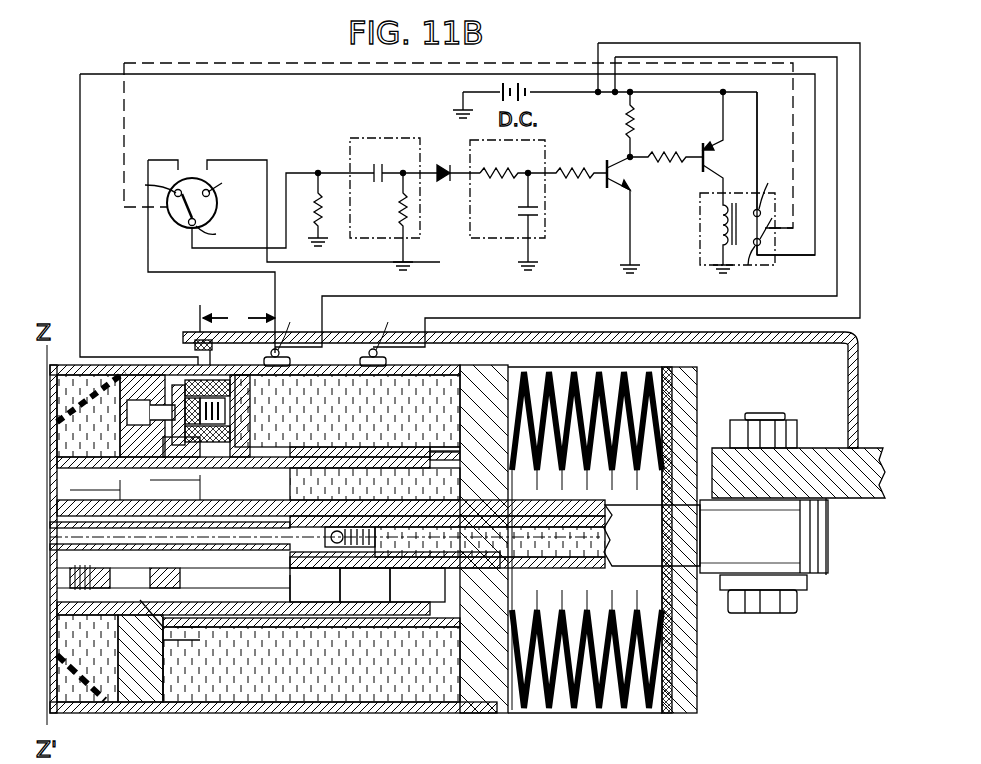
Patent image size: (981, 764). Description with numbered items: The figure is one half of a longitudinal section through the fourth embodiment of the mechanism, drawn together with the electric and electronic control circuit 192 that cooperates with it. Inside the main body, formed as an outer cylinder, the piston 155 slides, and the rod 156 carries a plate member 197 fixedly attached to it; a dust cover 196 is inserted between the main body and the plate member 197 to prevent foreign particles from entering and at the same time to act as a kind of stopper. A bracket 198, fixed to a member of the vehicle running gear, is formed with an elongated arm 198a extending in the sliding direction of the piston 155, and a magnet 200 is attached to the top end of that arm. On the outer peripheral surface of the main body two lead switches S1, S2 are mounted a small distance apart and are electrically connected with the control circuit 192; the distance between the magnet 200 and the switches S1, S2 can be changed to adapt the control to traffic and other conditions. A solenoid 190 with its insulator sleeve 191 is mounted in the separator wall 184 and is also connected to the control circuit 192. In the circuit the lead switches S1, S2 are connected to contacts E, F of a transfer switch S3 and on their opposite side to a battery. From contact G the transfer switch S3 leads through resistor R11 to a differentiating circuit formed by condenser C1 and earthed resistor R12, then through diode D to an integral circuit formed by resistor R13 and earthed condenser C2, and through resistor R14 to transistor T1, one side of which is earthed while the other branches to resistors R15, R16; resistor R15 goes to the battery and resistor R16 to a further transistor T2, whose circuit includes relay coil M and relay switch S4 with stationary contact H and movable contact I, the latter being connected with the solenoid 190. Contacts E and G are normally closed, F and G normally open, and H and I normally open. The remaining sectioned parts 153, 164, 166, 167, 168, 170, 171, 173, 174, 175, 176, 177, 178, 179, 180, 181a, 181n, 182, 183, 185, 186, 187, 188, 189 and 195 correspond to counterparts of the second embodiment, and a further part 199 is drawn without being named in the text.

The control circuit 192 is at (274, 53).
The elongated arm 198a is at (714, 343).
The bracket 198 is at (858, 488).
The magnet 200 is at (200, 342).
The lead switch S1 is at (286, 332).
The lead switch S2 is at (385, 332).
The transfer switch S3 is at (205, 203).
The relay switch S4 is at (762, 232).
The contact E is at (152, 184).
The contact F is at (221, 178).
The contact G is at (214, 234).
The stationary contact H is at (770, 172).
The movable contact I is at (745, 277).
The resistor R11 is at (332, 209).
The earthed resistor R12 is at (391, 221).
The resistor R13 is at (507, 189).
The resistor R14 is at (567, 190).
The resistor R15 is at (648, 126).
The resistor R16 is at (666, 176).
The condenser C1 is at (369, 188).
The earthed condenser C2 is at (512, 221).
The diode D is at (440, 185).
The transistor T1 is at (632, 215).
The transistor T2 is at (723, 142).
The relay coil M is at (737, 233).
The end plate 183 is at (423, 372).
The fluid chamber 182 is at (318, 447).
The housing portion 181a is at (118, 442).
The housing partition 181n is at (432, 458).
The separator wall 184 is at (90, 390).
The sleeve 185 is at (140, 395).
The wall 186 is at (195, 372).
The screw 187 is at (127, 420).
The seal 188 is at (216, 380).
The seal ring 189 is at (232, 412).
The solenoid 190 is at (212, 457).
The insulator sleeve 191 is at (240, 434).
The spring 166 is at (336, 530).
The piston rod 195 is at (498, 525).
The rod 156 is at (695, 540).
The washer 153 is at (826, 556).
The nut 199 is at (798, 606).
The plate member 197 is at (690, 669).
The dust cover 196 is at (645, 712).
The chamber 164 is at (320, 562).
The passage 167 is at (370, 556).
The passage 168 is at (420, 560).
The wall 173 is at (330, 590).
The spring 175 is at (140, 566).
The spring seat 179 is at (185, 566).
The chamber 170 is at (86, 658).
The chamber 176 is at (97, 664).
The wall 171 is at (185, 663).
The passage 177 is at (260, 595).
The chamber 180 is at (215, 627).
The piston 155 is at (311, 664).
The wedge 174 is at (135, 700).
The wall 178 is at (145, 620).